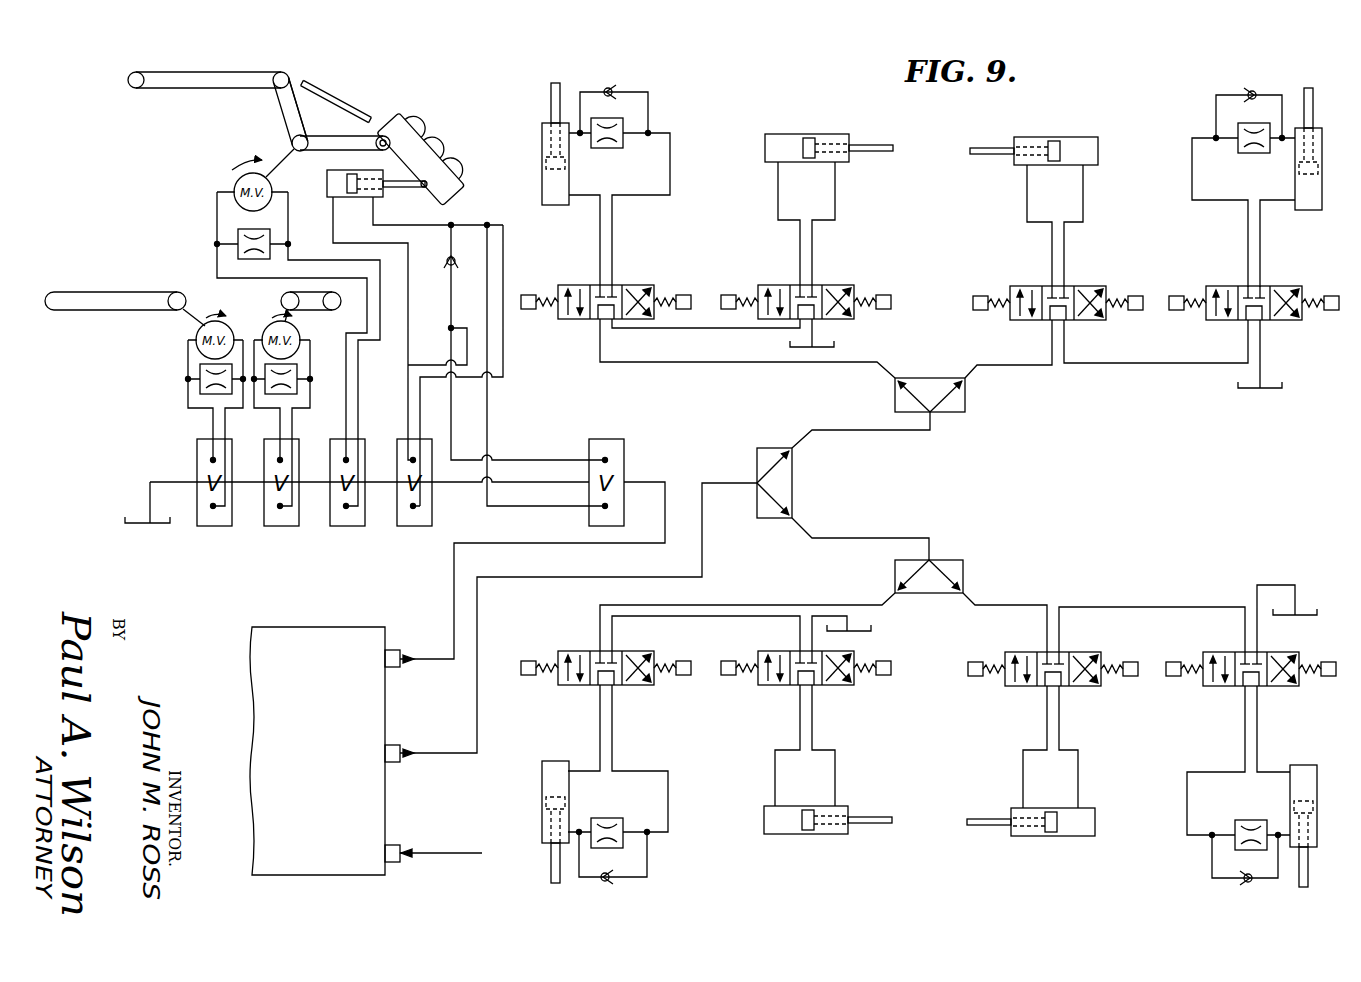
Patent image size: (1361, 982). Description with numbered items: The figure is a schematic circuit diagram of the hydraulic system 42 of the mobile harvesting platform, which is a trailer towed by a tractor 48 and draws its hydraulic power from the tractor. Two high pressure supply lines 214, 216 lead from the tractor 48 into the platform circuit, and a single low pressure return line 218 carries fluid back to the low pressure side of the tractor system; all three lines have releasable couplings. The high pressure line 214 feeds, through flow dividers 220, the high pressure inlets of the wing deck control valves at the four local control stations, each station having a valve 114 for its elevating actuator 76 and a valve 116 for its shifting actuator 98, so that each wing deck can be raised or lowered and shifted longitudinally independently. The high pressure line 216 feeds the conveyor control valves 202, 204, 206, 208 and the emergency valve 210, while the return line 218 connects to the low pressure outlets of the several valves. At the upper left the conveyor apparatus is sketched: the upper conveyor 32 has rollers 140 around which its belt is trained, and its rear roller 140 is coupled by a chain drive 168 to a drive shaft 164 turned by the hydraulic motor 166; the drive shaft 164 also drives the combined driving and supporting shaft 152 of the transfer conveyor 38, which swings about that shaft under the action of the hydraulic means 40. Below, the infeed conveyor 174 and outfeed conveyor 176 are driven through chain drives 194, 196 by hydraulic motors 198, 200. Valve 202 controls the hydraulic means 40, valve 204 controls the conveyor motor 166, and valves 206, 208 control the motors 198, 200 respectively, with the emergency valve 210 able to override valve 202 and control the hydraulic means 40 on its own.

The upper conveyor 32 is at (203, 70).
The roller 140 is at (283, 73).
The chain drive 168 is at (280, 103).
The drive shaft 164 is at (290, 157).
The combined driving and supporting shaft 152 is at (385, 120).
The transfer conveyor 38 is at (462, 185).
The hydraulic motor 166 is at (233, 192).
The hydraulic means 40 is at (325, 186).
The infeed conveyor 174 is at (136, 290).
The chain drive 194 is at (182, 316).
The outfeed conveyor 176 is at (294, 296).
The chain drive 196 is at (284, 318).
The hydraulic motor 198 is at (197, 338).
The hydraulic motor 200 is at (300, 336).
The valve 206 is at (213, 527).
The valve 208 is at (282, 527).
The valve 204 is at (348, 527).
The valve 202 is at (415, 527).
The emergency valve 210 is at (624, 447).
The tractor 48 is at (338, 627).
The high pressure hydraulic fluid supply line 216 is at (443, 665).
The high pressure hydraulic fluid supply line 214 is at (455, 758).
The low pressure hydraulic fluid return line 218 is at (437, 850).
The flow divider 220 is at (967, 393).
The hydraulic system 42 is at (1245, 437).
The valve 114 is at (584, 321).
The valve 116 is at (848, 284).
The linear fluid pressure actuator 76 is at (540, 137).
The shifting actuator 98 is at (823, 132).